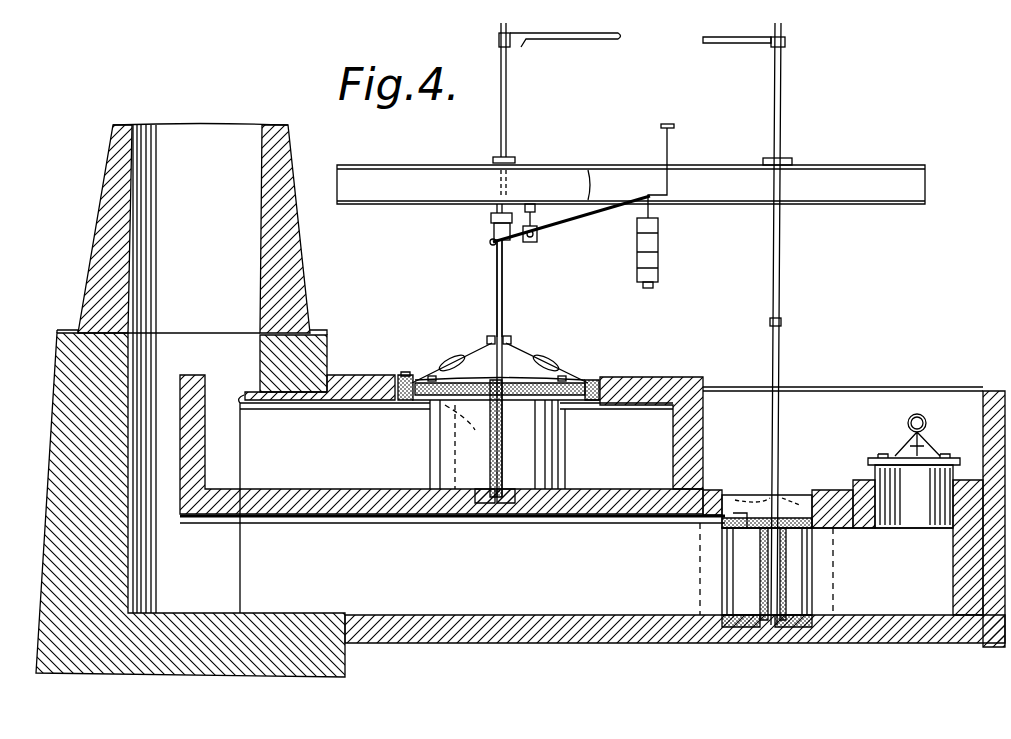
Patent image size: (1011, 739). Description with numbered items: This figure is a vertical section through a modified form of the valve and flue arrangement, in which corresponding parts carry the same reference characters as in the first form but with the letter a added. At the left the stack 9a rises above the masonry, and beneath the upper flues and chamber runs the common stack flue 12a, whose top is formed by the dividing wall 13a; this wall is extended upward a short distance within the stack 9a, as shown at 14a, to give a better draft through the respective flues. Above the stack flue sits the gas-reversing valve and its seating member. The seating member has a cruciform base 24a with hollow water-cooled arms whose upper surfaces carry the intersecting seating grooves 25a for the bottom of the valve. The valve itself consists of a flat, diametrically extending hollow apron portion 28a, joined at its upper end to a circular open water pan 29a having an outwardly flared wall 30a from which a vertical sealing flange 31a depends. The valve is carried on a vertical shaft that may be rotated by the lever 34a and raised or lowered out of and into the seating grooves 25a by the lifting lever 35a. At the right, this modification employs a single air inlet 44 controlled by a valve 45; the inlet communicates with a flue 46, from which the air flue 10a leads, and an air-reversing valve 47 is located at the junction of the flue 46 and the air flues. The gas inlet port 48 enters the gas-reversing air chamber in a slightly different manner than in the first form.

The stack 9a is at (190, 401).
The upward extension of dividing wall 14a is at (185, 428).
The dividing wall 13a is at (425, 518).
The stack flue 12a is at (675, 517).
The air flue 10a is at (808, 594).
The cruciform base 24a is at (480, 503).
The seating grooves 25a is at (508, 503).
The apron portion 28a is at (490, 436).
The water pan 29a is at (482, 381).
The flared wall 30a is at (437, 379).
The sealing flange 31a is at (404, 378).
The lever 34a is at (568, 40).
The lifting lever 35a is at (600, 212).
The air inlet 44 is at (914, 491).
The valve 45 is at (935, 449).
The flue 46 is at (897, 547).
The air-reversing valve 47 is at (757, 543).
The gas inlet port 48 is at (651, 433).